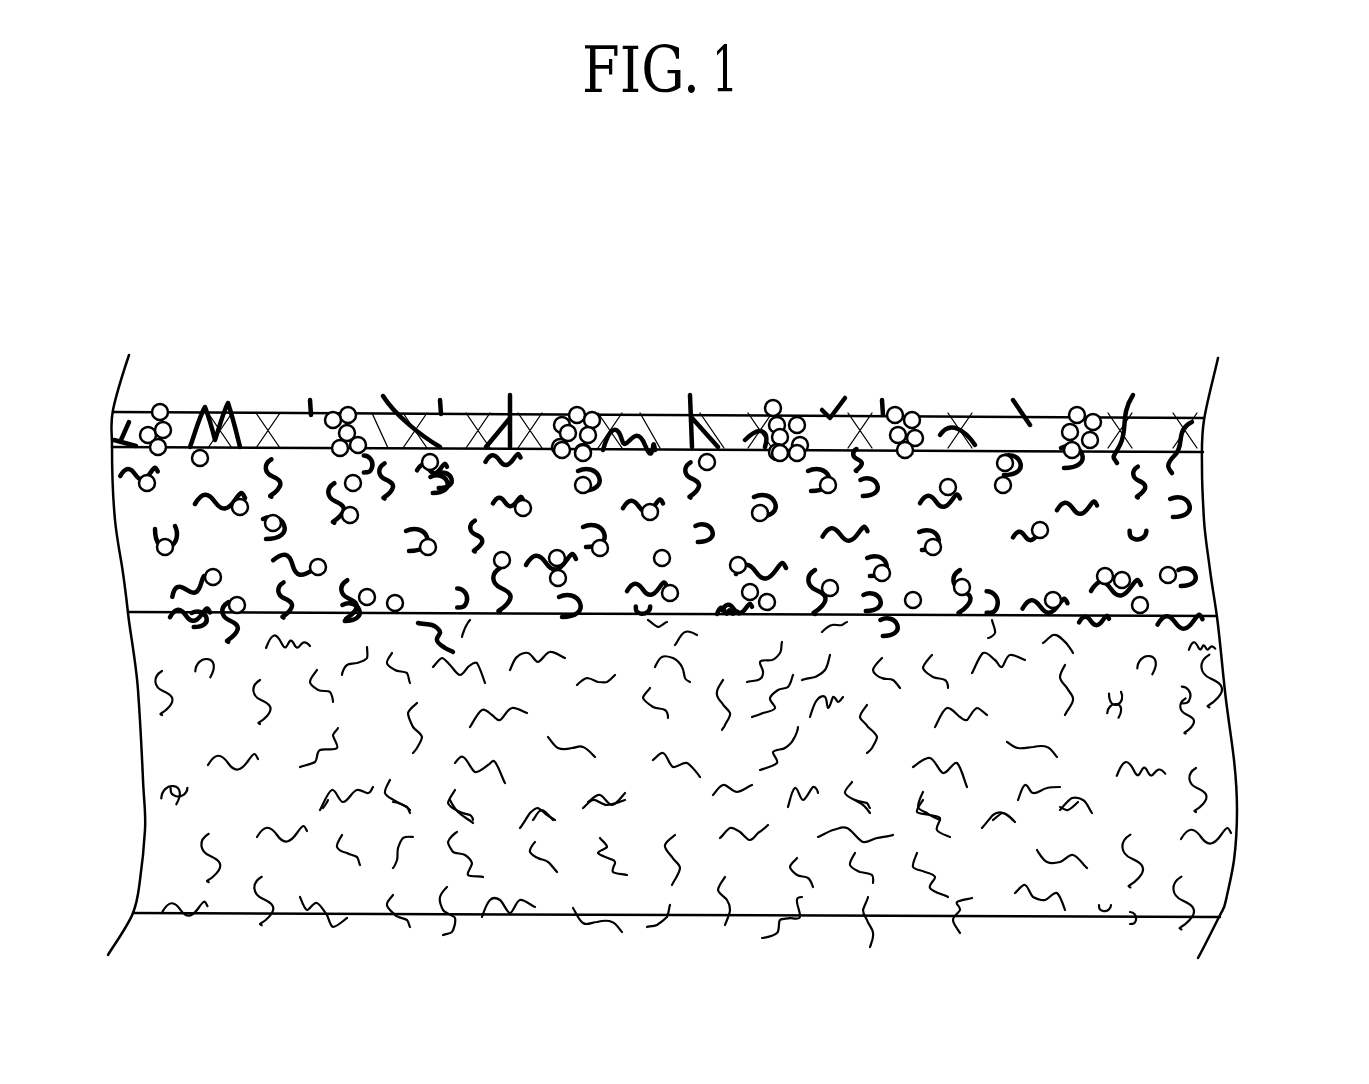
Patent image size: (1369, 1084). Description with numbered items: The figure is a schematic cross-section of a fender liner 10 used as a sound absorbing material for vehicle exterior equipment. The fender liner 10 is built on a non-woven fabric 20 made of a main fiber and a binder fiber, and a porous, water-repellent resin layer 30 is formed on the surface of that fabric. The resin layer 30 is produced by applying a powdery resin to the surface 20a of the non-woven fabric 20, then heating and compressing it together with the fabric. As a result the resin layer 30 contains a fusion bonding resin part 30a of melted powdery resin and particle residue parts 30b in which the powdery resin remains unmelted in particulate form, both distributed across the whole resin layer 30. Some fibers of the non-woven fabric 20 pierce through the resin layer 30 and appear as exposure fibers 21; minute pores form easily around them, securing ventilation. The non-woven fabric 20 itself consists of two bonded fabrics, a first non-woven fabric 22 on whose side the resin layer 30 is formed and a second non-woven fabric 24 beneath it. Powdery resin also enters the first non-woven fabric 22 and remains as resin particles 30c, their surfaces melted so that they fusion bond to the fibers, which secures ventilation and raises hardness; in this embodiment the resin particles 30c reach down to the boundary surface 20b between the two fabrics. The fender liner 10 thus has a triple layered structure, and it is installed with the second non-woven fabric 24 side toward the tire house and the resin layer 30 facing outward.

The fender liner 10 is at (813, 285).
The non-woven fabric 20 is at (696, 623).
The surface of the non-woven fabric 20a is at (403, 448).
The boundary surface 20b is at (157, 613).
The exposure fibers 21 is at (714, 413).
The first non-woven fabric 22 is at (1195, 592).
The second non-woven fabric 24 is at (720, 783).
The porous resin layer 30 is at (1188, 437).
The fusion bonding resin part 30a is at (523, 413).
The particle residue parts 30b is at (332, 418).
The resin particles 30c is at (652, 504).